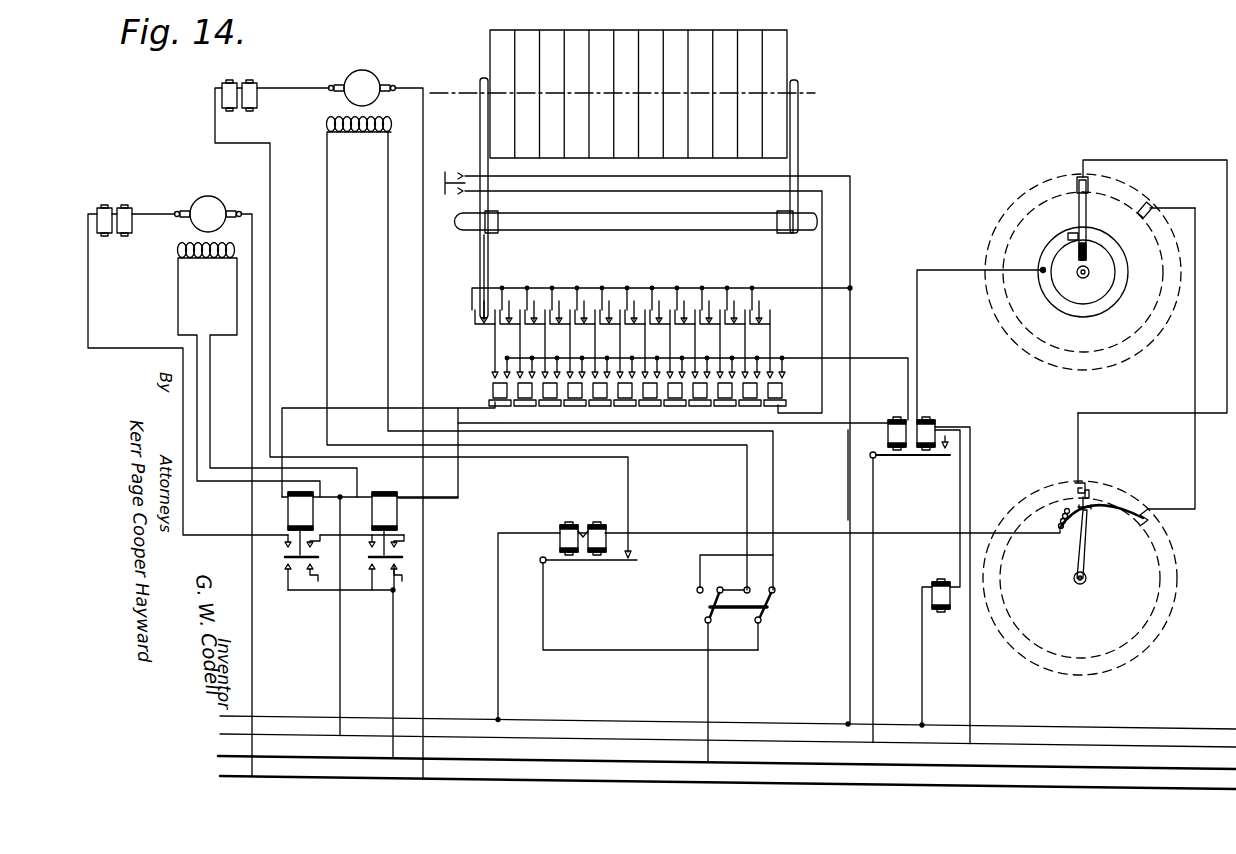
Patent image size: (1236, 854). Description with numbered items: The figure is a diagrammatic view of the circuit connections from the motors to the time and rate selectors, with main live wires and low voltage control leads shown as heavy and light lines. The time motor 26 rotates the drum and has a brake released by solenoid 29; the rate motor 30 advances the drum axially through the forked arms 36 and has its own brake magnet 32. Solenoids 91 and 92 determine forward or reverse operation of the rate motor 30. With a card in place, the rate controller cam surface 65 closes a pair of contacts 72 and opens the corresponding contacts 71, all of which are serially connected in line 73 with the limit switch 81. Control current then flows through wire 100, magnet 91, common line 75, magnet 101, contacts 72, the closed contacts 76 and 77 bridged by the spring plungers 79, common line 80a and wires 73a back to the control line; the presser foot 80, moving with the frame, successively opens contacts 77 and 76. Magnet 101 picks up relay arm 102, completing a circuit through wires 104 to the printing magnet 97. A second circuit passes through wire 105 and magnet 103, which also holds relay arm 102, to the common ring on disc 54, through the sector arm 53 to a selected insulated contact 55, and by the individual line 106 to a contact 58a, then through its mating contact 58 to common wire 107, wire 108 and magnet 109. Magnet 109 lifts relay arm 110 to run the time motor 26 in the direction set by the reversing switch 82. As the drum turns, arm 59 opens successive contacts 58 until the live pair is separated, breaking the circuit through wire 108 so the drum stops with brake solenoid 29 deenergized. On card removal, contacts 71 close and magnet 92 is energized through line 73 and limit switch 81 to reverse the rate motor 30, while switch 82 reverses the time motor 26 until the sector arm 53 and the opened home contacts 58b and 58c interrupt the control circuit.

The solenoid 29 is at (236, 84).
The time motor 26 is at (494, 418).
The magnetic brake magnet 32 is at (108, 207).
The rate motor 30 is at (244, 479).
The forked arms 36 is at (480, 132).
The limit switch 81 is at (452, 172).
The line 73 is at (618, 184).
The presser foot 80 is at (489, 264).
The common line 80a is at (612, 287).
The spring plungers 79 is at (559, 303).
The cooperating contacts 77 is at (677, 311).
The contacts 76 is at (689, 311).
The common line 75 is at (681, 357).
The contacts 72 is at (746, 370).
The cam surface 65 is at (778, 386).
The contacts 71 is at (492, 393).
The sector arm 53 is at (1086, 218).
The disc 54 is at (1118, 288).
The insulated contacts 55 is at (1151, 206).
The wire 105 is at (918, 339).
The individual line 106 is at (1195, 378).
The magnet 101 is at (890, 424).
The magnet 103 is at (938, 425).
The relay arm 102 is at (915, 460).
The wires 73a is at (848, 472).
The wire 108 is at (810, 535).
The printing magnet 97 is at (932, 585).
The wires 104 is at (873, 645).
The contacts 58 is at (1148, 530).
The contacts 58a is at (1144, 508).
The home contact 58b is at (1088, 486).
The home contact 58c is at (1076, 488).
The common wire 107 is at (1102, 512).
The arm 59 is at (1084, 562).
The solenoid 92 is at (290, 505).
The solenoid 91 is at (384, 498).
The magnet 109 is at (575, 524).
The relay arm 110 is at (602, 563).
The reversing switch 82 is at (736, 658).
The wire 100 is at (341, 668).